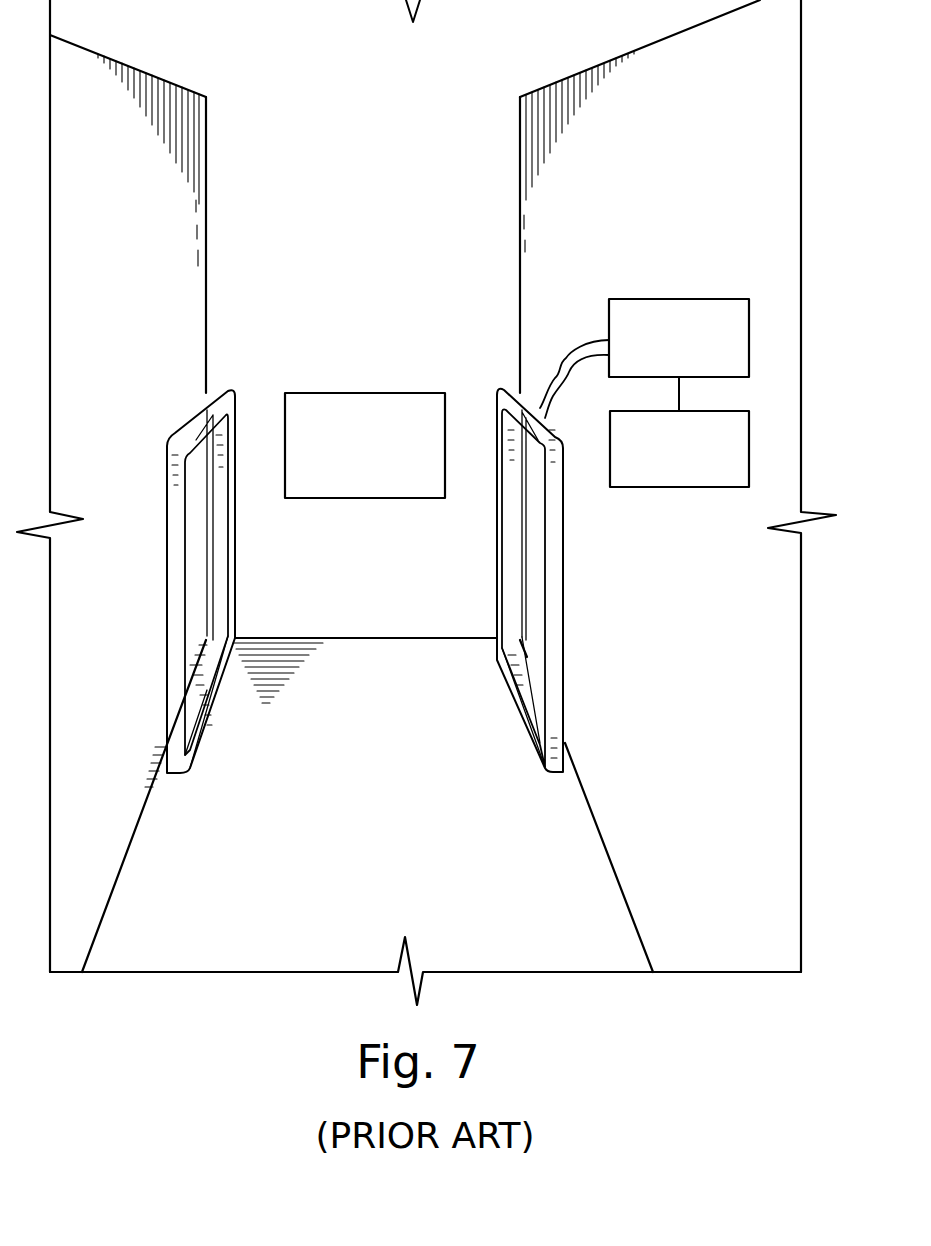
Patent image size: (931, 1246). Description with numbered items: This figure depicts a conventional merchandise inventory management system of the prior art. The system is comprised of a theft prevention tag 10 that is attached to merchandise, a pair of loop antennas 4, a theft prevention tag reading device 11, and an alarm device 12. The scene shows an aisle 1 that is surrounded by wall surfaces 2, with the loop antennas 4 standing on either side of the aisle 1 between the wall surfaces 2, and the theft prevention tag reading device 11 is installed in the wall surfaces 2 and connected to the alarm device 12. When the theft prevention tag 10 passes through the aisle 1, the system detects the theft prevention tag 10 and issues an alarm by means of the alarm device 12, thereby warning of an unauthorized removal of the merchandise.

The aisle 1 is at (359, 801).
The wall surfaces 2 is at (186, 245).
The loop antennas 4 is at (197, 408).
The theft prevention tag 10 is at (348, 393).
The theft prevention tag reading device 11 is at (702, 299).
The alarm device 12 is at (722, 487).